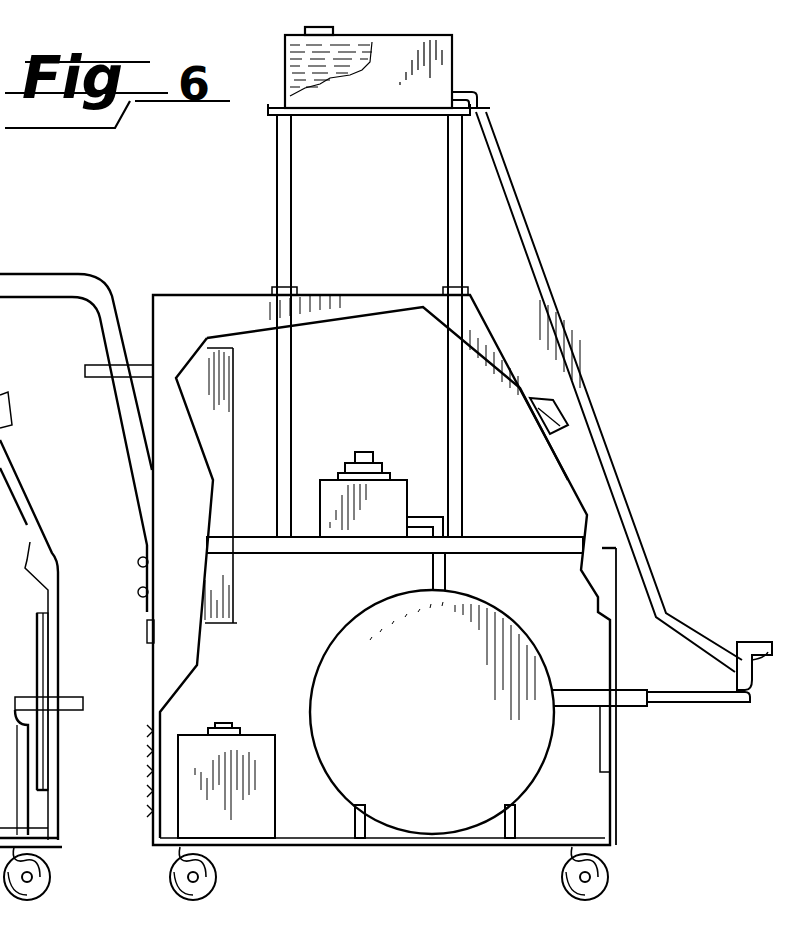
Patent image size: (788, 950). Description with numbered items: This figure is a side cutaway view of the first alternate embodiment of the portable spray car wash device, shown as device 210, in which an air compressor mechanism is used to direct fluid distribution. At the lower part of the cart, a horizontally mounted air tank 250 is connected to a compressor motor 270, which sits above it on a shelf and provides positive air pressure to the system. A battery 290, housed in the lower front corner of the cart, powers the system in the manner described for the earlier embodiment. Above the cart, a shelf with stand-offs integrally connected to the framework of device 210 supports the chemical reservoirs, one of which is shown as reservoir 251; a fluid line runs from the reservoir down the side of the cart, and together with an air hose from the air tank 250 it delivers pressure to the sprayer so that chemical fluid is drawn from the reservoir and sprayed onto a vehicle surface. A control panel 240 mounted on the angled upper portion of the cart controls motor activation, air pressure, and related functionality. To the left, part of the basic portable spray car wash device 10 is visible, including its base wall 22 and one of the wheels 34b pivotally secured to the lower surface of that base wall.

The portable spray car wash device 10 is at (0, 214).
The wheel 34b is at (55, 882).
The base wall 22 is at (752, 640).
The device 210 is at (570, 180).
The control panel 240 is at (553, 401).
The air tank 250 is at (455, 750).
The chemical reservoir 251 is at (444, 60).
The compressor motor 270 is at (400, 480).
The battery 290 is at (250, 828).